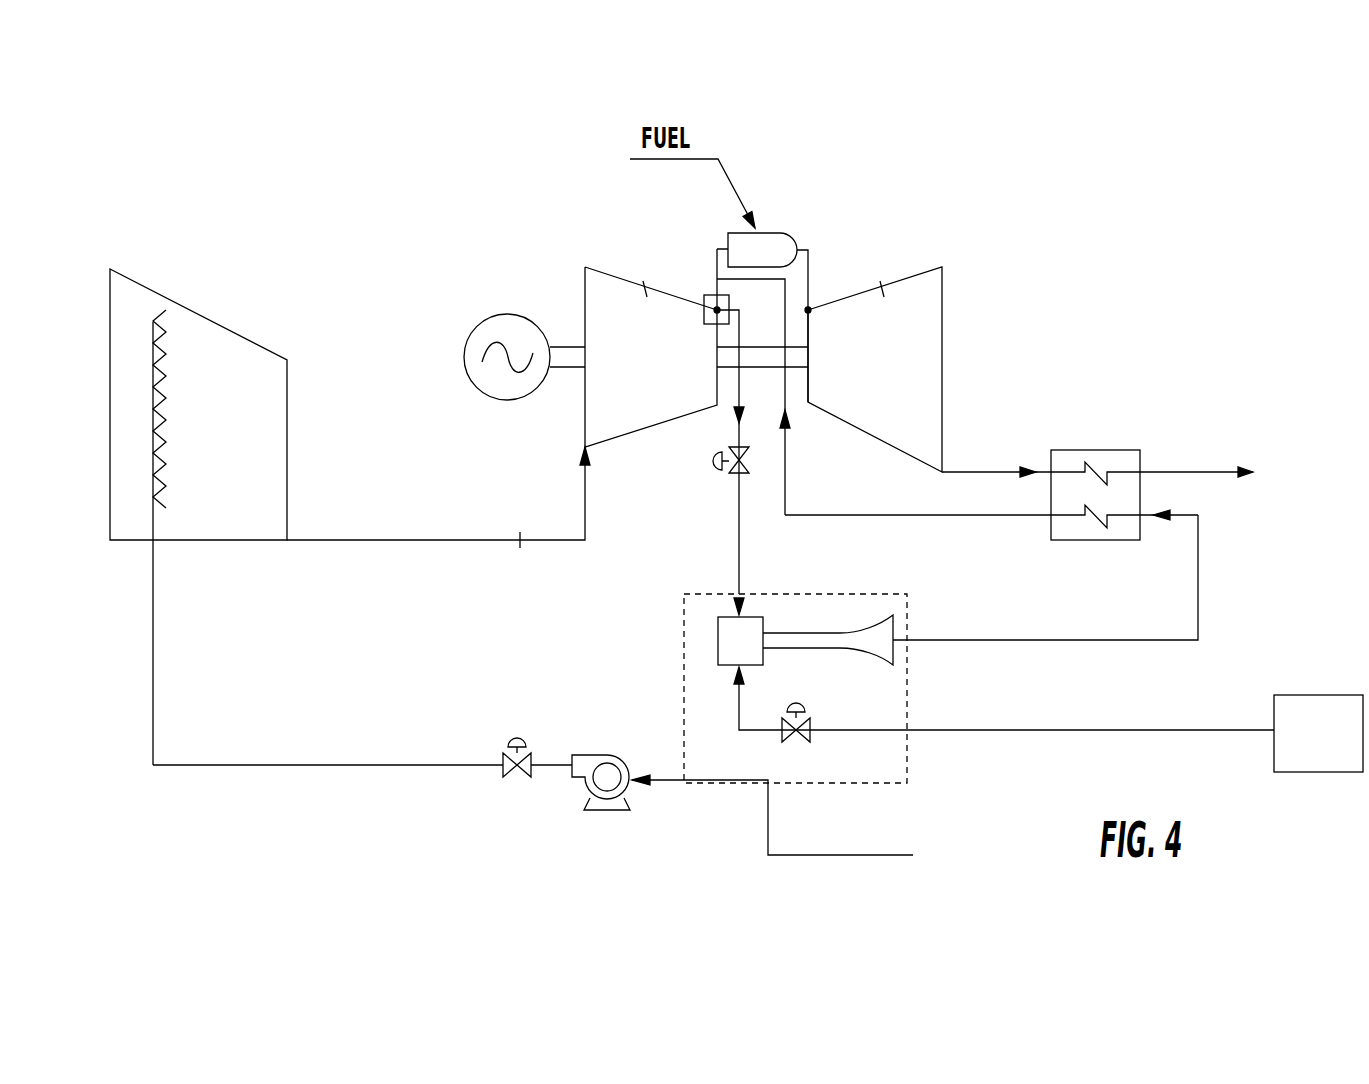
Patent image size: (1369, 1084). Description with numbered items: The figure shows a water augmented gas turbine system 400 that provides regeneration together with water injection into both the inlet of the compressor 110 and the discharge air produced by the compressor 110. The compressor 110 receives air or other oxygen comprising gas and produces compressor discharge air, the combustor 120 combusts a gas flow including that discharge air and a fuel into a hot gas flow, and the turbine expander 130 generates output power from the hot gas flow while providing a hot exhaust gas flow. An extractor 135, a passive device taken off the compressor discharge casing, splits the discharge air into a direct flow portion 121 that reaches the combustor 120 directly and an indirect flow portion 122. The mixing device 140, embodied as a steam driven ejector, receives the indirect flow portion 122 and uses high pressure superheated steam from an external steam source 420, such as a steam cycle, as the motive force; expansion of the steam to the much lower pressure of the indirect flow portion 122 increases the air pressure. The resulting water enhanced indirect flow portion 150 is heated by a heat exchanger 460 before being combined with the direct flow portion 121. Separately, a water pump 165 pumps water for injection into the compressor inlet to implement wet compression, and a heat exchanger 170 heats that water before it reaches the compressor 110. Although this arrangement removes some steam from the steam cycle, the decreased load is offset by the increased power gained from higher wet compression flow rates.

The water augmented gas turbine system 400 is at (1090, 278).
The compressor 110 is at (597, 282).
The combustor 120 is at (770, 232).
The direct flow portion 121 is at (706, 295).
The indirect flow portion 122 is at (735, 393).
The turbine expander 130 is at (920, 313).
The extractor 135 is at (716, 308).
The mixing device 140 is at (907, 755).
The water enhanced indirect flow portion 150 is at (992, 642).
The water pump 165 is at (577, 778).
The heat exchanger 170 is at (110, 472).
The external steam source 420 is at (1322, 772).
The heat exchanger 460 is at (1075, 450).